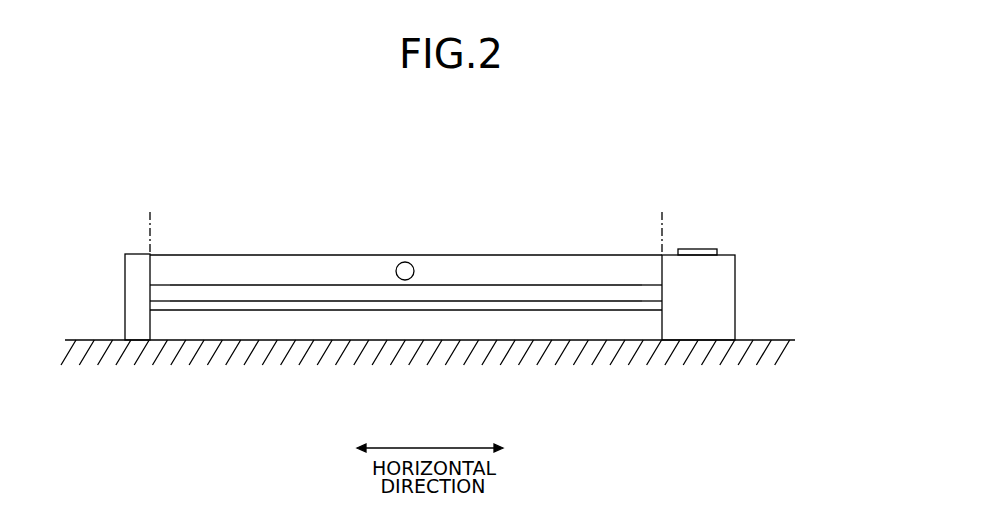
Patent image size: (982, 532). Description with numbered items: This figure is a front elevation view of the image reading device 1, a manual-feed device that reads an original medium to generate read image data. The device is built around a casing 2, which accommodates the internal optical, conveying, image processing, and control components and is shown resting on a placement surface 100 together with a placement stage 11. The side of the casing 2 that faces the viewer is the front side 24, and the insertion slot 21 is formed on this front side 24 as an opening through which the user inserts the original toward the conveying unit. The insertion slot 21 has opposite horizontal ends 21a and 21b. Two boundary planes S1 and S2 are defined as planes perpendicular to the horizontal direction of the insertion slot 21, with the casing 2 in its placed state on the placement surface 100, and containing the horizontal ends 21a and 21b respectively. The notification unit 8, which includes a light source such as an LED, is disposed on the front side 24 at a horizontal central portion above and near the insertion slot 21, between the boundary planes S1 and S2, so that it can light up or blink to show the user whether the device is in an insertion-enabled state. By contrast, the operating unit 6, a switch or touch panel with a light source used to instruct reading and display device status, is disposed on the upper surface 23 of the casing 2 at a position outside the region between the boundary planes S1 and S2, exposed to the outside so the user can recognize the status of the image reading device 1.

The image reading device 1 is at (77, 170).
The casing 2 is at (247, 254).
The operating unit 6 is at (697, 249).
The notification unit 8 is at (405, 262).
The placement stage 11 is at (243, 305).
The insertion slot 21 is at (365, 293).
The horizontal end of insertion slot 21a is at (150, 293).
The horizontal end of insertion slot 21b is at (660, 286).
The upper surface 23 is at (514, 255).
The front side 24 is at (323, 272).
The placement surface 100 is at (777, 339).
The boundary plane S1 is at (148, 222).
The boundary plane S2 is at (660, 222).